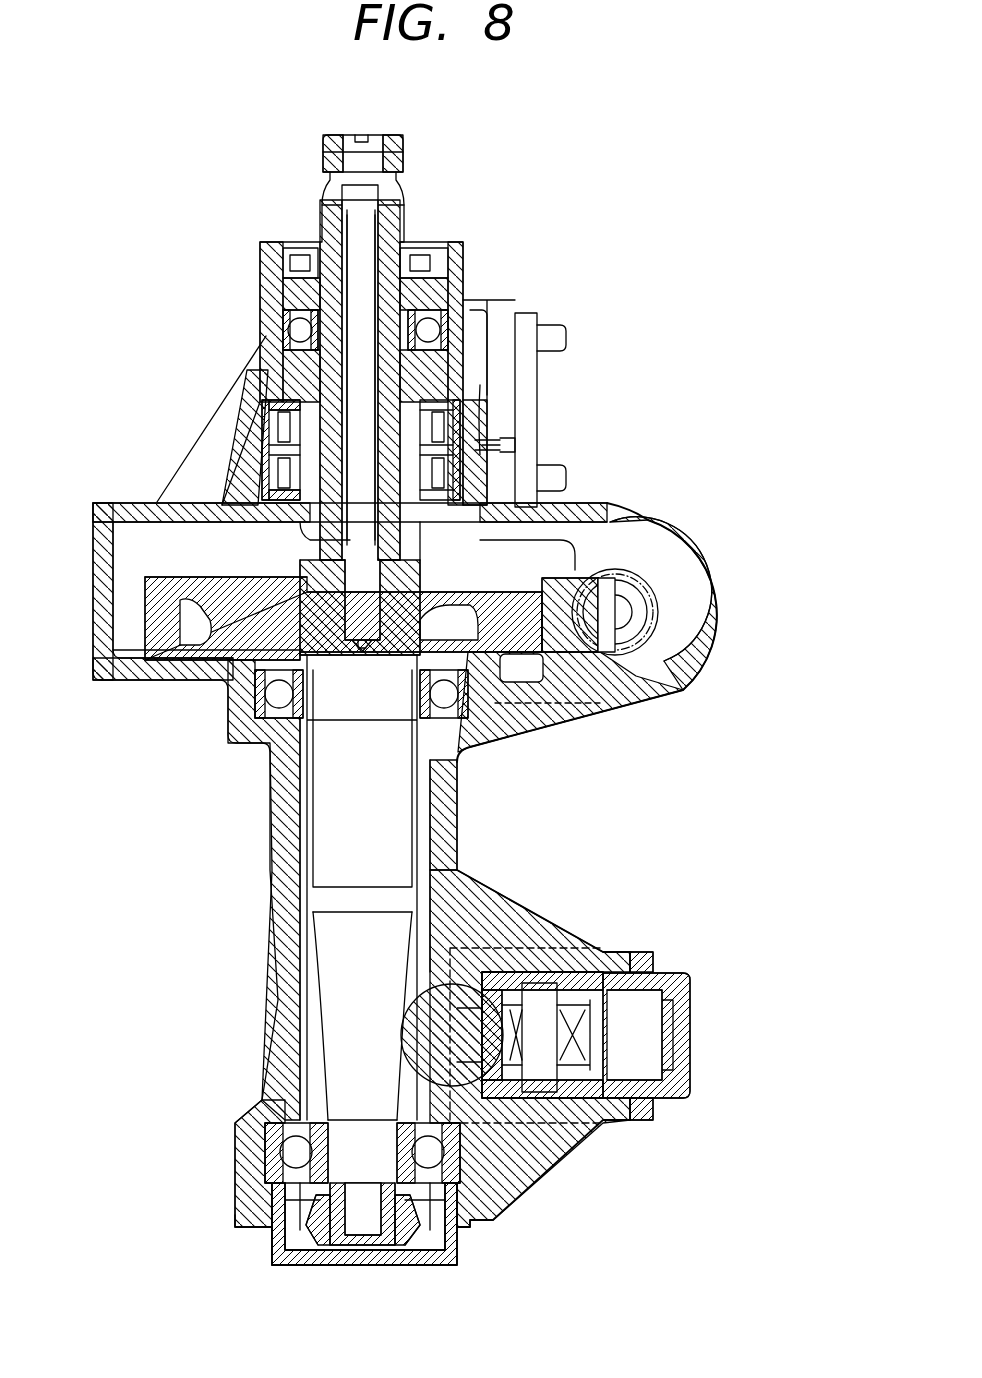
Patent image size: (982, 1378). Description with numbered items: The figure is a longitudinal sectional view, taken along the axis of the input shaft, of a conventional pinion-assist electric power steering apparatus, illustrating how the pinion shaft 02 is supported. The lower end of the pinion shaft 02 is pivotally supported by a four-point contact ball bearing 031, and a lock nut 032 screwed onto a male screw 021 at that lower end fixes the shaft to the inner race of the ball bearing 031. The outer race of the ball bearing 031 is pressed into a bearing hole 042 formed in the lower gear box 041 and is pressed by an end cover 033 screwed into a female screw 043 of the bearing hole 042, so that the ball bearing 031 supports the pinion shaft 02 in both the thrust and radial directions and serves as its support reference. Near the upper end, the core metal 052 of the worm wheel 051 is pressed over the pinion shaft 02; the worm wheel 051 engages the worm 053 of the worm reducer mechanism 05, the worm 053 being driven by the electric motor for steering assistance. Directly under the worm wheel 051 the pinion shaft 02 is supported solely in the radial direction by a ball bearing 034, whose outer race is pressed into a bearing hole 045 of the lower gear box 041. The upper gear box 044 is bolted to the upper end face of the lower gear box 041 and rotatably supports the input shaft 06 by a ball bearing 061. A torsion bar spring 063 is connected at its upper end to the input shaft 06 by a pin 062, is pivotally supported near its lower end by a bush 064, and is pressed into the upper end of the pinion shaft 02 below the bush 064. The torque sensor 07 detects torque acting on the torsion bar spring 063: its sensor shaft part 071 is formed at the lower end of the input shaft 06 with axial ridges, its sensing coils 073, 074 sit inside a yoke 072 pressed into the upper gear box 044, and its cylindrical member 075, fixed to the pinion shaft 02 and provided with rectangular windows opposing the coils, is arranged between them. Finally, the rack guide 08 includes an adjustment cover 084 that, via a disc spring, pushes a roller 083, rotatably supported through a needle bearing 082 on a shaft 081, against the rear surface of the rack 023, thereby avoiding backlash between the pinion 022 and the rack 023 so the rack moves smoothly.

The pinion shaft 02 is at (330, 848).
The male screw 021 is at (355, 1257).
The pinion 022 is at (322, 1011).
The rack 023 is at (465, 1060).
The ball bearing 031 is at (296, 1147).
The lock nut 032 is at (405, 1252).
The end cover 033 is at (283, 1267).
The ball bearing 034 is at (462, 745).
The lower gear box 041 is at (276, 906).
The bearing hole 042 is at (262, 1180).
The female screw 043 is at (262, 1211).
The upper gear box 044 is at (458, 262).
The bearing hole 045 is at (264, 714).
The worm reducer mechanism 05 is at (660, 575).
The worm wheel 051 is at (558, 650).
The core metal 052 is at (484, 605).
The worm 053 is at (653, 620).
The input shaft 06 is at (398, 197).
The ball bearing 061 is at (288, 332).
The pin 062 is at (373, 147).
The torsion bar spring 063 is at (358, 219).
The bush 064 is at (382, 545).
The torque sensor 07 is at (182, 428).
The sensor shaft part 071 is at (490, 401).
The yoke 072 is at (278, 446).
The sensing coil 073 is at (270, 413).
The sensing coil 074 is at (272, 476).
The cylindrical member 075 is at (488, 554).
The rack guide 08 is at (708, 973).
The lock pin 081 is at (532, 1095).
The needle bearing 082 is at (576, 1080).
The roller 083 is at (499, 1000).
The adjustment cover 084 is at (685, 1026).